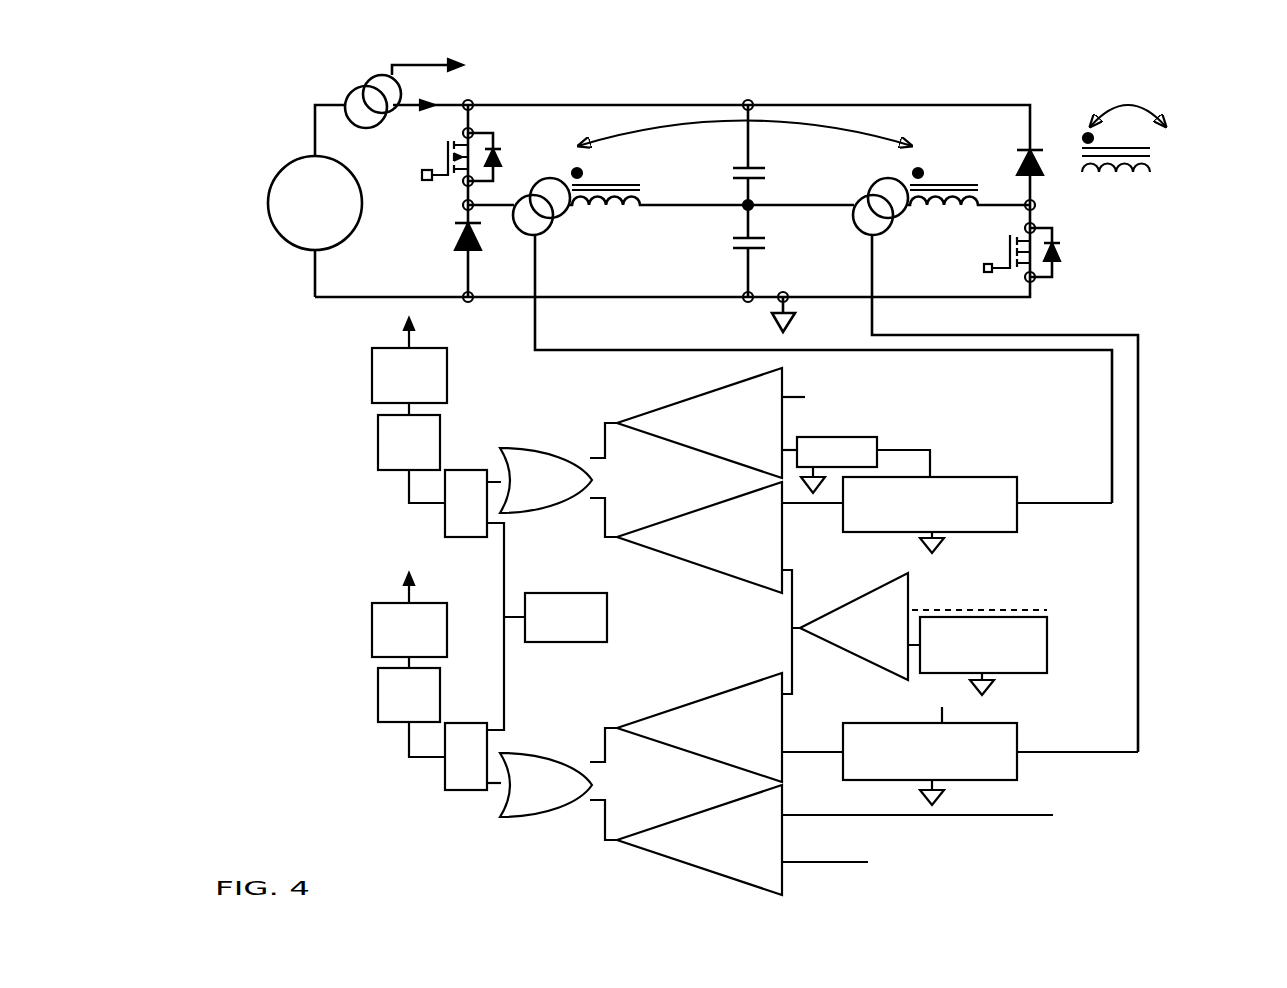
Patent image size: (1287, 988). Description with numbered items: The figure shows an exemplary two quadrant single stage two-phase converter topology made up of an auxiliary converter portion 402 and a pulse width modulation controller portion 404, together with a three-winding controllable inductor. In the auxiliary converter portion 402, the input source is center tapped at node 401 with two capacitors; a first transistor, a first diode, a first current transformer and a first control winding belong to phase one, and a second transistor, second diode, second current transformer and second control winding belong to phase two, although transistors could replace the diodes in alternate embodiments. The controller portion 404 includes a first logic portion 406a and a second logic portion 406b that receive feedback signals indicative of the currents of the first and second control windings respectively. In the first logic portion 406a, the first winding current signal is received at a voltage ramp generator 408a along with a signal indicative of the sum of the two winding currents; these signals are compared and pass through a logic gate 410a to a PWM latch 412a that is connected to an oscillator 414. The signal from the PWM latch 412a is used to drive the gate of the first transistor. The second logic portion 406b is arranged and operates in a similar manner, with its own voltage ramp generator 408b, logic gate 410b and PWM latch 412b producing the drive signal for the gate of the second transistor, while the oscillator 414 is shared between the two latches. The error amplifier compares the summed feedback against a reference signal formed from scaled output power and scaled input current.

The node 401 is at (753, 205).
The auxiliary converter portion 402 is at (282, 103).
The pulse width modulation controller portion 404 is at (1165, 400).
The first logic portion 406a is at (1058, 433).
The second logic portion 406b is at (1058, 656).
The voltage ramp generator 408a is at (1005, 477).
The voltage ramp generator 408b is at (857, 722).
The logic gate 410a is at (552, 450).
The logic gate 410b is at (552, 755).
The PWM latch 412a is at (467, 468).
The PWM latch 412b is at (467, 722).
The oscillator 414 is at (563, 592).